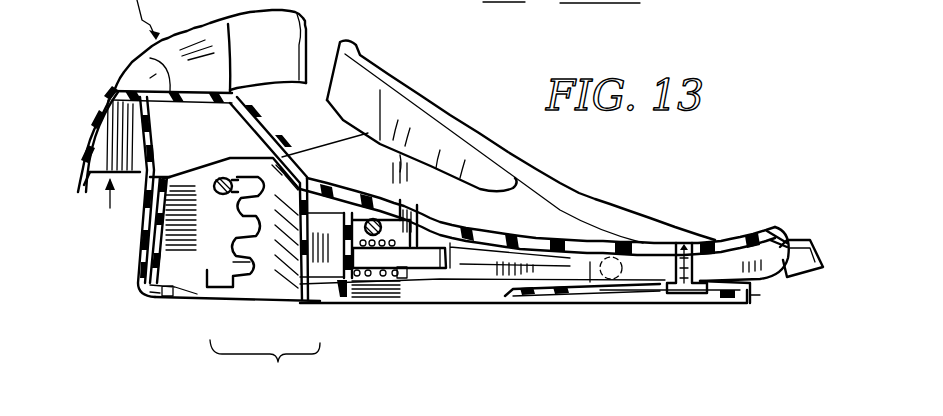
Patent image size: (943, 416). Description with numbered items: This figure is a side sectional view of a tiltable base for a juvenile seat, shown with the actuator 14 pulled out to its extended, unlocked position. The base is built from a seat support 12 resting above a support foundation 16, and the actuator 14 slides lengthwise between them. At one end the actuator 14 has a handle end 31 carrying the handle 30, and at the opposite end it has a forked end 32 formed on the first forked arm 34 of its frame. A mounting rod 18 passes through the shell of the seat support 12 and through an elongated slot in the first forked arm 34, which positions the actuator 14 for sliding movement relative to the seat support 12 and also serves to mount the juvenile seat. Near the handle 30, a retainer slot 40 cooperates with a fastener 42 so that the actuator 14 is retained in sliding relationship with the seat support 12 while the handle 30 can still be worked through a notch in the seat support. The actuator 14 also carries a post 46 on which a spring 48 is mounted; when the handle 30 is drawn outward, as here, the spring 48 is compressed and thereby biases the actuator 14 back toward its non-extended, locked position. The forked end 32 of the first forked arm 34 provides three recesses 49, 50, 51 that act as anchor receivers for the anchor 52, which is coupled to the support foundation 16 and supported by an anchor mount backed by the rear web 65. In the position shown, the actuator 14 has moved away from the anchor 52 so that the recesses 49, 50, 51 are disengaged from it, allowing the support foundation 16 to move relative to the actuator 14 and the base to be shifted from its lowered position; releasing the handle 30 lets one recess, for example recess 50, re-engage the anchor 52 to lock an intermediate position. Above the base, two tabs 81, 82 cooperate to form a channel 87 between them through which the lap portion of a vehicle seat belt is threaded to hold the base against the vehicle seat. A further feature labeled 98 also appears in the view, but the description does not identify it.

The seat support 12 is at (579, 212).
The actuator 14 is at (641, 238).
The support foundation 16 is at (167, 299).
The mounting rod 18 is at (378, 219).
The handle 30 is at (818, 242).
The handle end 31 is at (763, 295).
The forked end 32 is at (277, 362).
The first forked arm 34 is at (262, 272).
The retainer slot 40 is at (720, 297).
The fastener 42 is at (687, 297).
The post 46 is at (423, 270).
The spring 48 is at (370, 283).
The recess 49 is at (254, 185).
The recess 50 is at (235, 226).
The recess 51 is at (232, 267).
The anchor 52 is at (218, 180).
The rear web 65 is at (150, 240).
The tab 81 is at (284, 55).
The tab 82 is at (368, 91).
The channel 87 is at (328, 46).
The aperture 98 is at (591, 284).